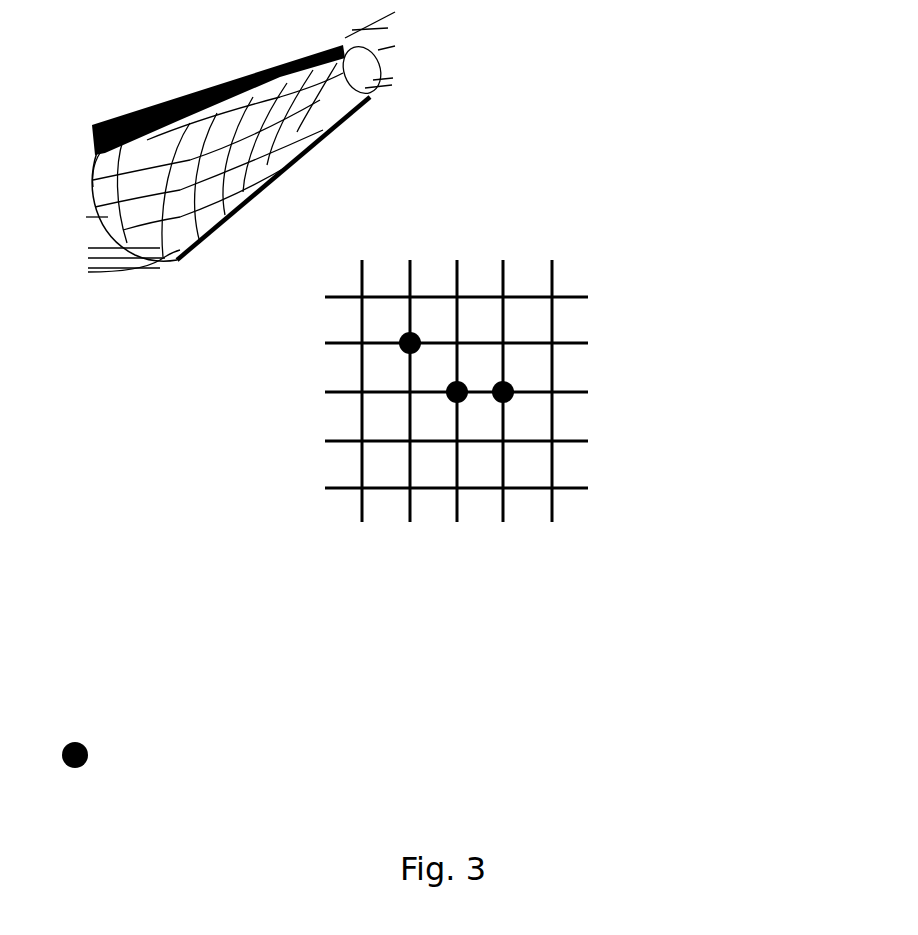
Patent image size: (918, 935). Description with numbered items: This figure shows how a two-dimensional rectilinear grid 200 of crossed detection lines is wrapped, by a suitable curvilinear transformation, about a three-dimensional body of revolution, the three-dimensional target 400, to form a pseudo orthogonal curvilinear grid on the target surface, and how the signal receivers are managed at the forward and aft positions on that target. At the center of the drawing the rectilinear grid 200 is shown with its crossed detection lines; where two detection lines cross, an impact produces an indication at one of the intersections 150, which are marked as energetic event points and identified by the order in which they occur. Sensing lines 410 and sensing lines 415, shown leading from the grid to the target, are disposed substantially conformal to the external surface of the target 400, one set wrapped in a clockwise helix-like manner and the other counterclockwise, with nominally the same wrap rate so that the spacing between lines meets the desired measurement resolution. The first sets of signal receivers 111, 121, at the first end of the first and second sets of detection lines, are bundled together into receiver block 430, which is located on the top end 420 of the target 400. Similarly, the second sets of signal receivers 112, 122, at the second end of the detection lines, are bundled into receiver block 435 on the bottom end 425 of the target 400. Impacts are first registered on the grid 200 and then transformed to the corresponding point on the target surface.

The first set of signal receivers 111 is at (672, 517).
The second set of signal receivers 112 is at (240, 275).
The first set of signal receivers 121 is at (332, 192).
The second set of signal receivers 122 is at (582, 598).
The intersections 150 is at (425, 343).
The rectilinear grid 200 is at (822, 405).
The 3D target 400 is at (210, 88).
The sensing lines 410 is at (265, 163).
The sensing lines 415 is at (228, 165).
The top end 420 is at (386, 55).
The bottom end 425 is at (118, 690).
The receiver block 430 is at (389, 50).
The receiver block 435 is at (455, 648).